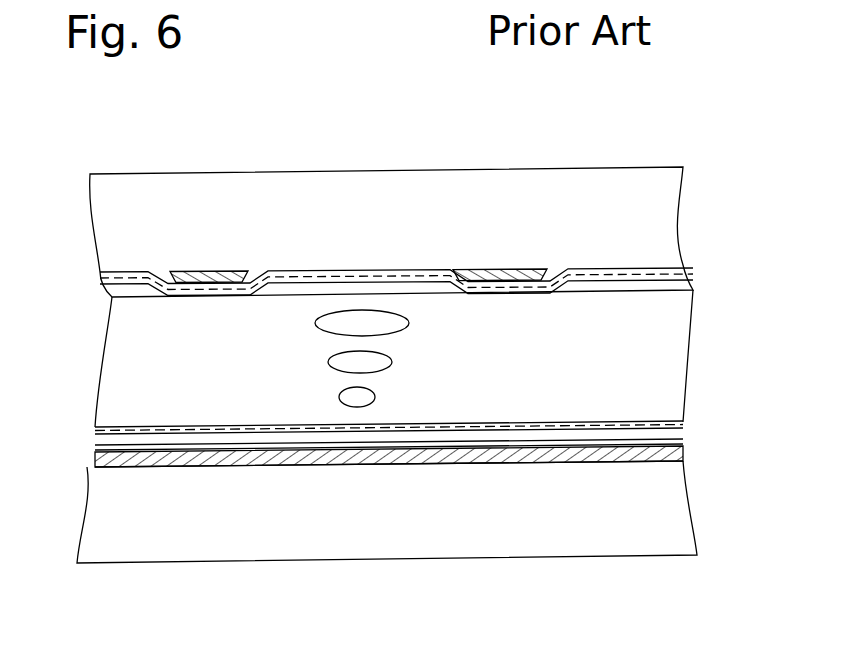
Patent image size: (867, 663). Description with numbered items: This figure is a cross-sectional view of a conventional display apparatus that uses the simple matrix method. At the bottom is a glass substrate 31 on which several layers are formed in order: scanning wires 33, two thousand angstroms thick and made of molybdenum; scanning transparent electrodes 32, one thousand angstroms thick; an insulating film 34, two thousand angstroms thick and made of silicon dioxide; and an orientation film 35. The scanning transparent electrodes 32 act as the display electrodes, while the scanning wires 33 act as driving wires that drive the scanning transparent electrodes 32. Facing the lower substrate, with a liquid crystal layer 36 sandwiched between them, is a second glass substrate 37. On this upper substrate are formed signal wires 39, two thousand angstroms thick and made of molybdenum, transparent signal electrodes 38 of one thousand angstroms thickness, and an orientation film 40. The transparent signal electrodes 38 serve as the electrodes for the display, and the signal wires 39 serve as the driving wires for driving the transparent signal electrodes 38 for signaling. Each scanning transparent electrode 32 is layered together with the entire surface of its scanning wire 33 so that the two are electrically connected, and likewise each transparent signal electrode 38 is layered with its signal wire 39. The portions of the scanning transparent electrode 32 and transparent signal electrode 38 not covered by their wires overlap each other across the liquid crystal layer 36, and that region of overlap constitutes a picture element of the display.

The glass substrate 31 is at (340, 527).
The scanning transparent electrodes 32 is at (553, 452).
The scanning wires 33 is at (482, 460).
The insulating film 34 is at (407, 440).
The orientation film 35 is at (280, 433).
The liquid crystal layer 36 is at (322, 367).
The glass substrate 37 is at (538, 196).
The transparent signal electrodes 38 is at (315, 283).
The signal wires 39 is at (228, 280).
The orientation film 40 is at (385, 276).